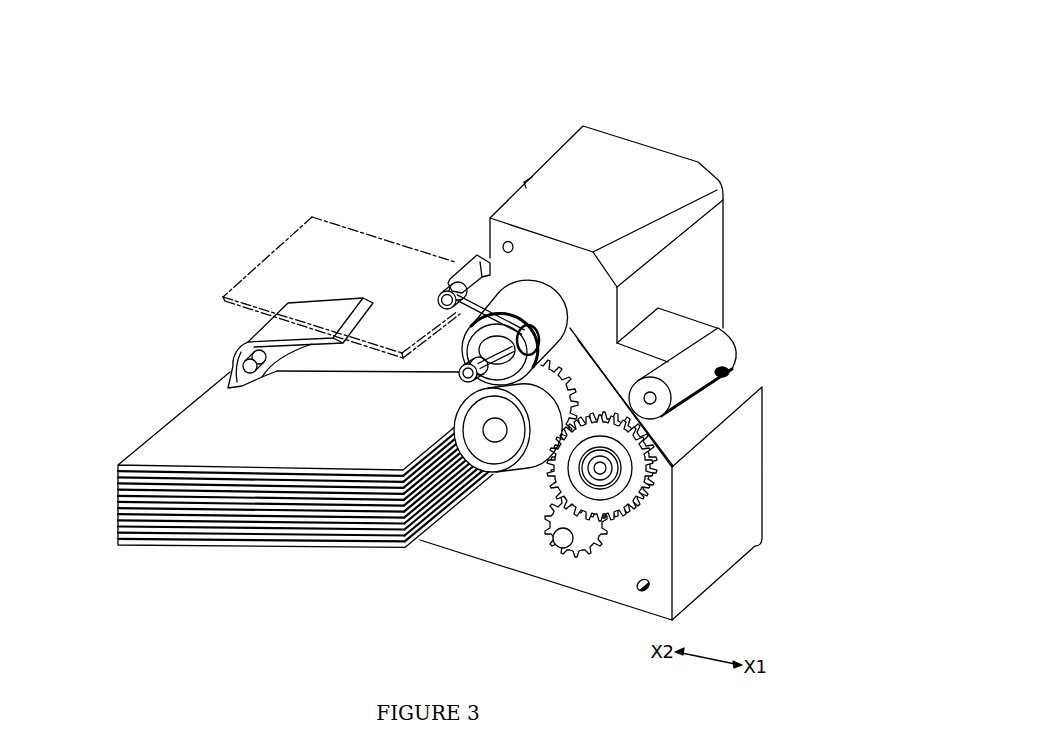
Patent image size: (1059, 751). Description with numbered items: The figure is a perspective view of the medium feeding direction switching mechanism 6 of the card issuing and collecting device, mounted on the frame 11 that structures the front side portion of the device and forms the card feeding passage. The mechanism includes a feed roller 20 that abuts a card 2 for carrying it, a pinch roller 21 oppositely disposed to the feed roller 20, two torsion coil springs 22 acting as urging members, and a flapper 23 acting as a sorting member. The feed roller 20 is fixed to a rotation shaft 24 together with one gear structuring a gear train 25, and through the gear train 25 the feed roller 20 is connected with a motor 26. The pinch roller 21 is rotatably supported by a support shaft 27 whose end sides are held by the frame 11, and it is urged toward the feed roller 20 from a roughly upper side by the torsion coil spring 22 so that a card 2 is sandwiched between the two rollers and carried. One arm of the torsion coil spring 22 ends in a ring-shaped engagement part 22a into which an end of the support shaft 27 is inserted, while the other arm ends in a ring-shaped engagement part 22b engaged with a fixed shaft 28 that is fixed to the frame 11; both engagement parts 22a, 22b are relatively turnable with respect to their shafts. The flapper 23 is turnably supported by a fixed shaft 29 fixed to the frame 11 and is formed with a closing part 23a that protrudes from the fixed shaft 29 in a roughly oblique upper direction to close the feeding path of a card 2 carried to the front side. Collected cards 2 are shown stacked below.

The card 2 is at (363, 232).
The medium feeding direction switching mechanism 6 is at (511, 115).
The frame 11 is at (647, 150).
The feed roller 20 is at (508, 458).
The pinch roller 21 is at (545, 317).
The torsion coil spring 22 is at (463, 310).
The engagement part 22a is at (461, 362).
The engagement part 22b is at (436, 303).
The flapper 23 is at (326, 299).
The closing part 23a is at (315, 348).
The rotation shaft 24 is at (497, 436).
The gear train 25 is at (649, 518).
The motor 26 is at (607, 552).
The support shaft 27 is at (458, 382).
The fixed shaft 28 is at (438, 293).
The fixed shaft 29 is at (253, 373).